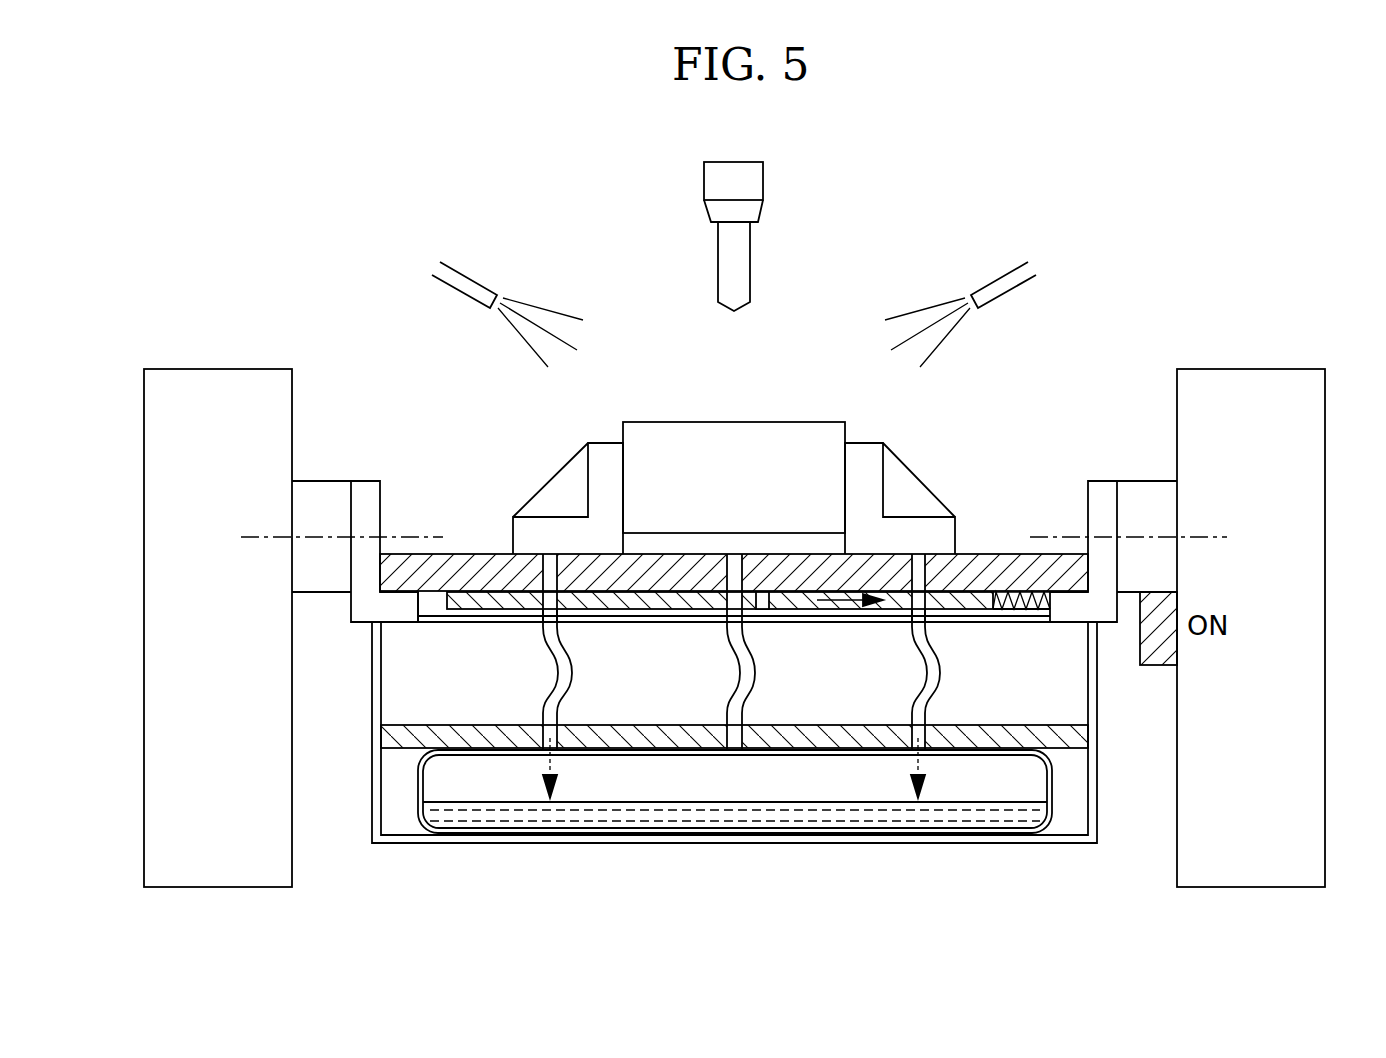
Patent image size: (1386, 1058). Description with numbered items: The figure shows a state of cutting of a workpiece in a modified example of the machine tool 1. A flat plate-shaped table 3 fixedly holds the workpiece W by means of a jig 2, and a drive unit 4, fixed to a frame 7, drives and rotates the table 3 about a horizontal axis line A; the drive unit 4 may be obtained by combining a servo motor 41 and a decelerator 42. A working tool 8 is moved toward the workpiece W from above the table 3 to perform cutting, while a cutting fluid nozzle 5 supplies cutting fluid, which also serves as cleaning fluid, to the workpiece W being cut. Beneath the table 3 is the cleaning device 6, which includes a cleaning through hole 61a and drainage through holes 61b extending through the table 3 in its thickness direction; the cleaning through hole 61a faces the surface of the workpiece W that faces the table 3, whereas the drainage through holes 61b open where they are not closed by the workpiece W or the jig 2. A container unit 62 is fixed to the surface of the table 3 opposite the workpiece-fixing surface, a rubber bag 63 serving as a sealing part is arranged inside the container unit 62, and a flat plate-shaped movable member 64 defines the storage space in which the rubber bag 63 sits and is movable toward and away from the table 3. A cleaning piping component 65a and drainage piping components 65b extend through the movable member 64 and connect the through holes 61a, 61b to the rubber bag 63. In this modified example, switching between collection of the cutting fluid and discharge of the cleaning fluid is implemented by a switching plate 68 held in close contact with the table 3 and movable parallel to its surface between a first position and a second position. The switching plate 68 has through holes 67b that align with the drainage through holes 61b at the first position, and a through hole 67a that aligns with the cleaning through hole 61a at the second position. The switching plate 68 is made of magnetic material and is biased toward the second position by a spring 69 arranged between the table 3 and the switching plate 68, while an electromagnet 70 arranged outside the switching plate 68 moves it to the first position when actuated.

The machine tool 1 is at (338, 198).
The jig 2 is at (600, 440).
The table 3 is at (453, 536).
The drive unit 4 is at (303, 455).
The cutting fluid nozzle 5 is at (467, 273).
The cleaning device 6 is at (851, 867).
The frame 7 is at (367, 478).
The working tool 8 is at (750, 252).
The servo motor 41 is at (215, 368).
The decelerator 42 is at (322, 594).
The cleaning through hole 61a is at (735, 563).
The drainage through hole 61b is at (549, 563).
The container unit 62 is at (1097, 793).
The rubber bag 63 is at (418, 792).
The movable member 64 is at (417, 723).
The cleaning piping component 65a is at (743, 677).
The drainage piping component 65b is at (557, 672).
The through hole 67a is at (763, 613).
The through hole 67b is at (557, 617).
The switching plate 68 is at (962, 613).
The spring 69 is at (1030, 613).
The electromagnet 70 is at (1155, 667).